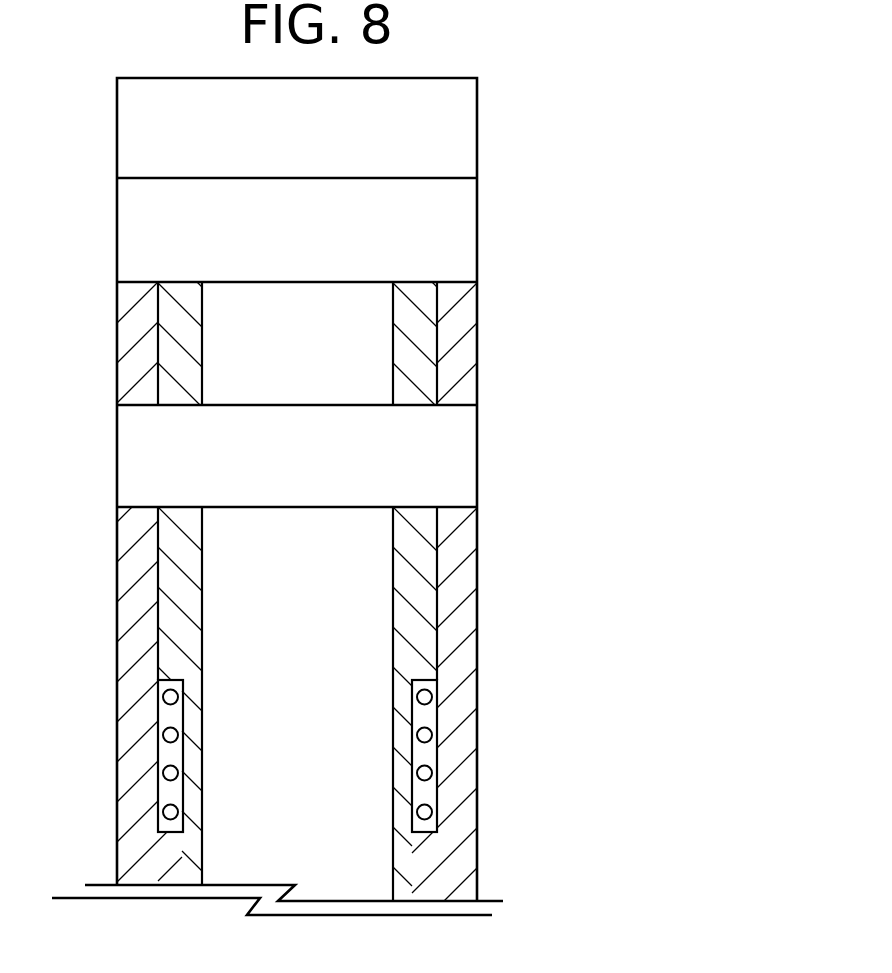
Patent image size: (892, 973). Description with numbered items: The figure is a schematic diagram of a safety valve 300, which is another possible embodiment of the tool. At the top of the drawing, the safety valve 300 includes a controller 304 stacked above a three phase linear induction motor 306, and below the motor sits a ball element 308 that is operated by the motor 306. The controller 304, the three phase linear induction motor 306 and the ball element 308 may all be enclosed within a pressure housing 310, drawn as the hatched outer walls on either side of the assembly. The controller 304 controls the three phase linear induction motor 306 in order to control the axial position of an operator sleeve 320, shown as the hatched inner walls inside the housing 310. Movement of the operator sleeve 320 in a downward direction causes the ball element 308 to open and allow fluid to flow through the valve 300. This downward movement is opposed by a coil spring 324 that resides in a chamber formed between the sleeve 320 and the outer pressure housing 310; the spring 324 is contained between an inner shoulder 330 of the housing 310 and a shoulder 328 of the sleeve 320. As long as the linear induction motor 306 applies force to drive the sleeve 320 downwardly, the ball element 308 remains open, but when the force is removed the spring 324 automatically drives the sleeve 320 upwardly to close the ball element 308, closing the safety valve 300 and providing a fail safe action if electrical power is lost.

The safety valve 300 is at (602, 123).
The controller 304 is at (136, 119).
The three phase linear induction motor 306 is at (152, 225).
The ball element 308 is at (445, 482).
The pressure housing 310 is at (462, 368).
The operator sleeve 320 is at (424, 324).
The coil spring 324 is at (430, 689).
The shoulder of the sleeve 328 is at (433, 675).
The inner shoulder of the housing 330 is at (437, 828).